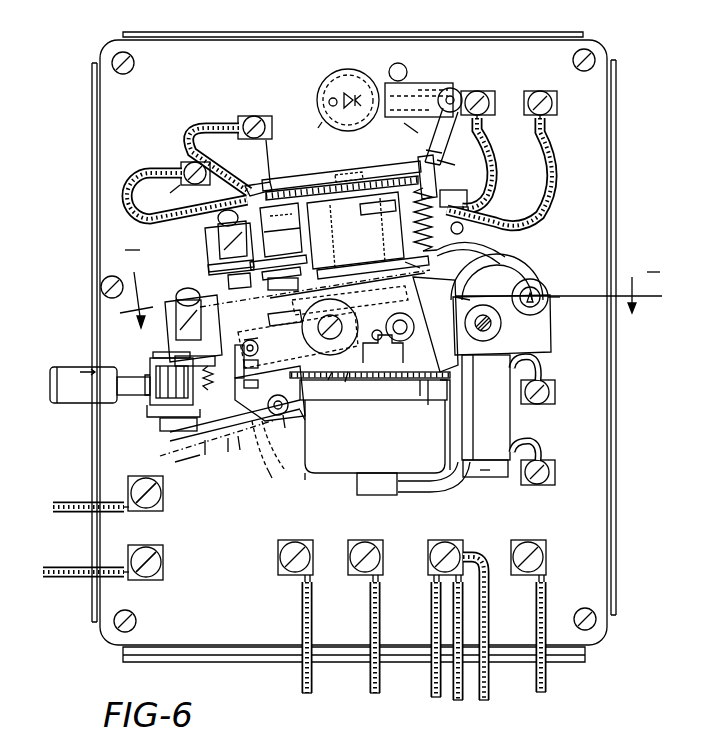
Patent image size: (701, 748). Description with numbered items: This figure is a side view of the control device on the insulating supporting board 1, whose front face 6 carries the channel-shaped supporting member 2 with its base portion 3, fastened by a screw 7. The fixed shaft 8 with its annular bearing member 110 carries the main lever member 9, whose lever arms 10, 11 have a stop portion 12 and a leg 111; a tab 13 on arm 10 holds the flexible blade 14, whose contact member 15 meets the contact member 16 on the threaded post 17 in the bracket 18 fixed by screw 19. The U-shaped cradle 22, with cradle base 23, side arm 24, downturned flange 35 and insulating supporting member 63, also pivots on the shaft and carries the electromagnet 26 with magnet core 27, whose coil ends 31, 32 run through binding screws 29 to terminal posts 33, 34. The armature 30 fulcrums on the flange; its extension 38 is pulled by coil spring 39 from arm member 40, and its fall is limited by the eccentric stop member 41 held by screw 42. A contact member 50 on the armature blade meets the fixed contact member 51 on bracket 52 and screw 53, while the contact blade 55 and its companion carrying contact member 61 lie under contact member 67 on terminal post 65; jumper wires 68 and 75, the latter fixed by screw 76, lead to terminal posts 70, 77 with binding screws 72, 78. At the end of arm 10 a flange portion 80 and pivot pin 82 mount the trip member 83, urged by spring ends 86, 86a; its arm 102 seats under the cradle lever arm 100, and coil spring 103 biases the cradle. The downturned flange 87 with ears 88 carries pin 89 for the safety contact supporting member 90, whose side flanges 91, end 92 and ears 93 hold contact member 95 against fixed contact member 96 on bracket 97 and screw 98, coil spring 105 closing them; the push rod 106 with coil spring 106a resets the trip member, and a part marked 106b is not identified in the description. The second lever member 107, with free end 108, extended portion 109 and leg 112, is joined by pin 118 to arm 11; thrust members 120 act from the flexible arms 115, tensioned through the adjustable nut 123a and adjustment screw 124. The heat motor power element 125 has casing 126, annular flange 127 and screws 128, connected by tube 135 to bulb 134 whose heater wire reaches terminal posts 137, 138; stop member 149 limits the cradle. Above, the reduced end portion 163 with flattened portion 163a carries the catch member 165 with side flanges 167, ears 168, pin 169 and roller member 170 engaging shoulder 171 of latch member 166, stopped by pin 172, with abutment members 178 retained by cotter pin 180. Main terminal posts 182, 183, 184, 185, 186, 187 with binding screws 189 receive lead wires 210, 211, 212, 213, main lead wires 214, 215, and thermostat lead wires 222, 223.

The supporting board 1 is at (615, 624).
The channel-shaped supporting member 2 is at (388, 381).
The base portion 3 is at (420, 397).
The front face of board 6 is at (603, 501).
The screw 7 is at (391, 289).
The shaft 8 is at (408, 327).
The main lever member 9 is at (462, 252).
The lever arm 10 is at (250, 340).
The lever arm 11 is at (520, 277).
The extended stop portion 12 is at (331, 380).
The tab 13 is at (345, 383).
The flexible blade 14 is at (230, 428).
The contact member 15 is at (208, 380).
The contact member 16 is at (268, 250).
The threaded post 17 is at (171, 378).
The bracket 18 is at (175, 316).
The screw 19 is at (180, 300).
The cradle 22 is at (433, 191).
The cradle base 23 is at (360, 176).
The cradle side arm 24 is at (345, 178).
The electromagnet 26 is at (276, 225).
The magnet core 27 is at (345, 236).
The binding screws 29 is at (478, 92).
The armature 30 is at (355, 230).
The coil end 31 is at (495, 166).
The coil end 32 is at (555, 173).
The terminal post 33 is at (490, 104).
The terminal post 34 is at (556, 105).
The downturned flange 35 is at (408, 211).
The armature extension 38 is at (475, 261).
The coil spring 39 is at (446, 196).
The arm member 40 is at (418, 166).
The adjustable stop member 41 is at (318, 346).
The screw 42 is at (345, 327).
The contact member 50 is at (232, 287).
The fixed contact member 51 is at (214, 271).
The bracket 52 is at (208, 250).
The screw 53 is at (220, 226).
The contact carrying blade 55 is at (315, 288).
The contact member 61 is at (252, 286).
The supporting member 63 is at (335, 170).
The terminal post 65 is at (288, 253).
The contact member 67 is at (287, 275).
The jumper wire 68 is at (190, 136).
The terminal post 70 is at (268, 142).
The binding screw 72 is at (262, 116).
The jumper wire 75 is at (135, 213).
The screw 76 is at (256, 184).
The terminal post 77 is at (167, 194).
The binding post 78 is at (185, 166).
The flange portion 80 is at (300, 385).
The pivot pin 82 is at (251, 339).
The trip member 83 is at (260, 448).
The spring end 86 is at (237, 390).
The spring end 86a is at (239, 340).
The downturned flange 87 is at (300, 421).
The ears 88 is at (263, 481).
The pin 89 is at (270, 393).
The contact supporting member 90 is at (206, 455).
The side flanges 91 is at (230, 454).
The end of member 92 is at (241, 450).
The ears 93 is at (284, 428).
The contact member 95 is at (192, 430).
The fixed contact member 96 is at (178, 418).
The bracket 97 is at (147, 376).
The screw 98 is at (165, 368).
The lever arm 100 is at (313, 327).
The arm 102 is at (252, 352).
The coil spring 103 is at (423, 332).
The coil spring 105 is at (281, 448).
The push rod 106 is at (85, 384).
The coil spring 106a is at (157, 381).
The wire 106b is at (193, 471).
The second lever member 107 is at (522, 287).
The free end 108 is at (370, 258).
The extended portion 109 is at (383, 230).
The bearing member 110 is at (395, 351).
The leg 111 is at (465, 341).
The leg 112 is at (455, 361).
The flexible arms 115 is at (470, 300).
The pin 118 is at (548, 290).
The thrust members 120 is at (548, 301).
The adjustable nut 123a is at (545, 326).
The adjustment screw 124 is at (492, 323).
The power element 125 is at (312, 480).
The casing 126 is at (347, 492).
The annular flange 127 is at (358, 406).
The screws 128 is at (428, 406).
The bulb 134 is at (500, 452).
The tube 135 is at (430, 481).
The terminal post 137 is at (572, 376).
The terminal post 138 is at (558, 473).
The stop member 149 is at (456, 155).
The reduced end portion 163 is at (329, 105).
The flattened portion 163a is at (414, 105).
The catch member 165 is at (415, 83).
The latch member 166 is at (429, 150).
The side flanges 167 is at (420, 88).
The ears 168 is at (351, 80).
The pin 169 is at (445, 86).
The roller member 170 is at (451, 91).
The shoulder 171 is at (399, 123).
The pin 172 is at (398, 63).
The abutment members 178 is at (342, 82).
The cotter pin 180 is at (338, 90).
The terminal post 182 is at (534, 542).
The terminal post 183 is at (430, 574).
The terminal post 184 is at (388, 545).
The terminal post 185 is at (280, 574).
The terminal post 186 is at (168, 553).
The terminal post 187 is at (162, 477).
The binding screws 189 is at (160, 497).
The lead wire 210 is at (458, 702).
The lead wire 211 is at (312, 694).
The lead wire 212 is at (431, 698).
The lead wire 213 is at (381, 675).
The main lead wire 214 is at (548, 684).
The main lead wire 215 is at (485, 702).
The lead wire 222 is at (60, 578).
The lead wire 223 is at (60, 503).